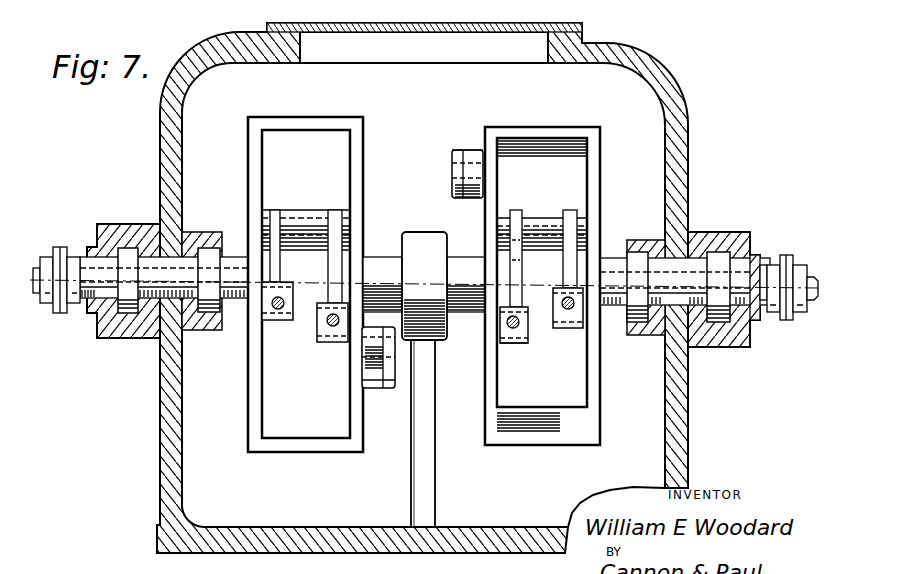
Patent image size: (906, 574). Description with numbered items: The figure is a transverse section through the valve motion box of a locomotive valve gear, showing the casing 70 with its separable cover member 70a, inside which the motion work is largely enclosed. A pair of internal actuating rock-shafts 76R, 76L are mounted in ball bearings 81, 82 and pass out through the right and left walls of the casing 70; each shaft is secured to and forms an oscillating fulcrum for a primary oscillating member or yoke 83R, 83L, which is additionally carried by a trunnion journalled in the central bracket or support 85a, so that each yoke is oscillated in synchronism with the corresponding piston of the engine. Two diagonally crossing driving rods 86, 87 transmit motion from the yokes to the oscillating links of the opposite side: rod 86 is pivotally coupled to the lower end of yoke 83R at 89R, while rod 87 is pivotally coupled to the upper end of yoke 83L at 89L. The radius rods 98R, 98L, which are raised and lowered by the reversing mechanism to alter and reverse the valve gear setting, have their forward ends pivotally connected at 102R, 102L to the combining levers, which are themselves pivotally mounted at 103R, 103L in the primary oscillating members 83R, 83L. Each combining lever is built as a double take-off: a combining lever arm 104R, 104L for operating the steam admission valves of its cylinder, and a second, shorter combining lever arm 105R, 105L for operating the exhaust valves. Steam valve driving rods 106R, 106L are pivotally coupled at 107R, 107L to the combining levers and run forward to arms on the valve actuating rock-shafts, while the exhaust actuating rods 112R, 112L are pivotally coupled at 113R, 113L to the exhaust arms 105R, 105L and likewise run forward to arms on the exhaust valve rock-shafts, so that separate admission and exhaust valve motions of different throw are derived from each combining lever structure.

The box or casing 70 is at (165, 463).
The separable portion or cover member 70a is at (165, 141).
The right internal rock-shaft 76R is at (163, 297).
The left internal rock-shaft 76L is at (695, 295).
The bearing 81 is at (124, 246).
The bearing 82 is at (206, 246).
The right primary oscillating member or yoke 83R is at (300, 117).
The left primary oscillating member or yoke 83L is at (588, 409).
The central bracket or support 85a is at (423, 488).
The driving rod 86 is at (383, 388).
The driving rod 87 is at (470, 152).
The pivotal coupling 89R is at (360, 346).
The pivotal coupling 89L is at (452, 165).
The right radius rod 98R is at (327, 264).
The left radius rod 98L is at (523, 271).
The pivotal connection 102R is at (424, 286).
The pivotal connection 102L is at (350, 276).
The combining lever pivot 103R is at (358, 226).
The combining lever pivot 103L is at (483, 233).
The combining lever arm 104R is at (332, 254).
The combining lever arm 104L is at (513, 262).
The second combining lever arm 105R is at (277, 255).
The second combining lever arm 105L is at (571, 252).
The steam valve driving rod 106R is at (333, 328).
The steam valve driving rod 106L is at (509, 327).
The pivotal coupling 107R is at (278, 310).
The pivotal coupling 107L is at (528, 330).
The exhaust actuating rod 112R is at (264, 322).
The exhaust actuating rod 112L is at (567, 310).
The pivotal coupling 113R is at (262, 319).
The pivotal coupling 113L is at (583, 324).